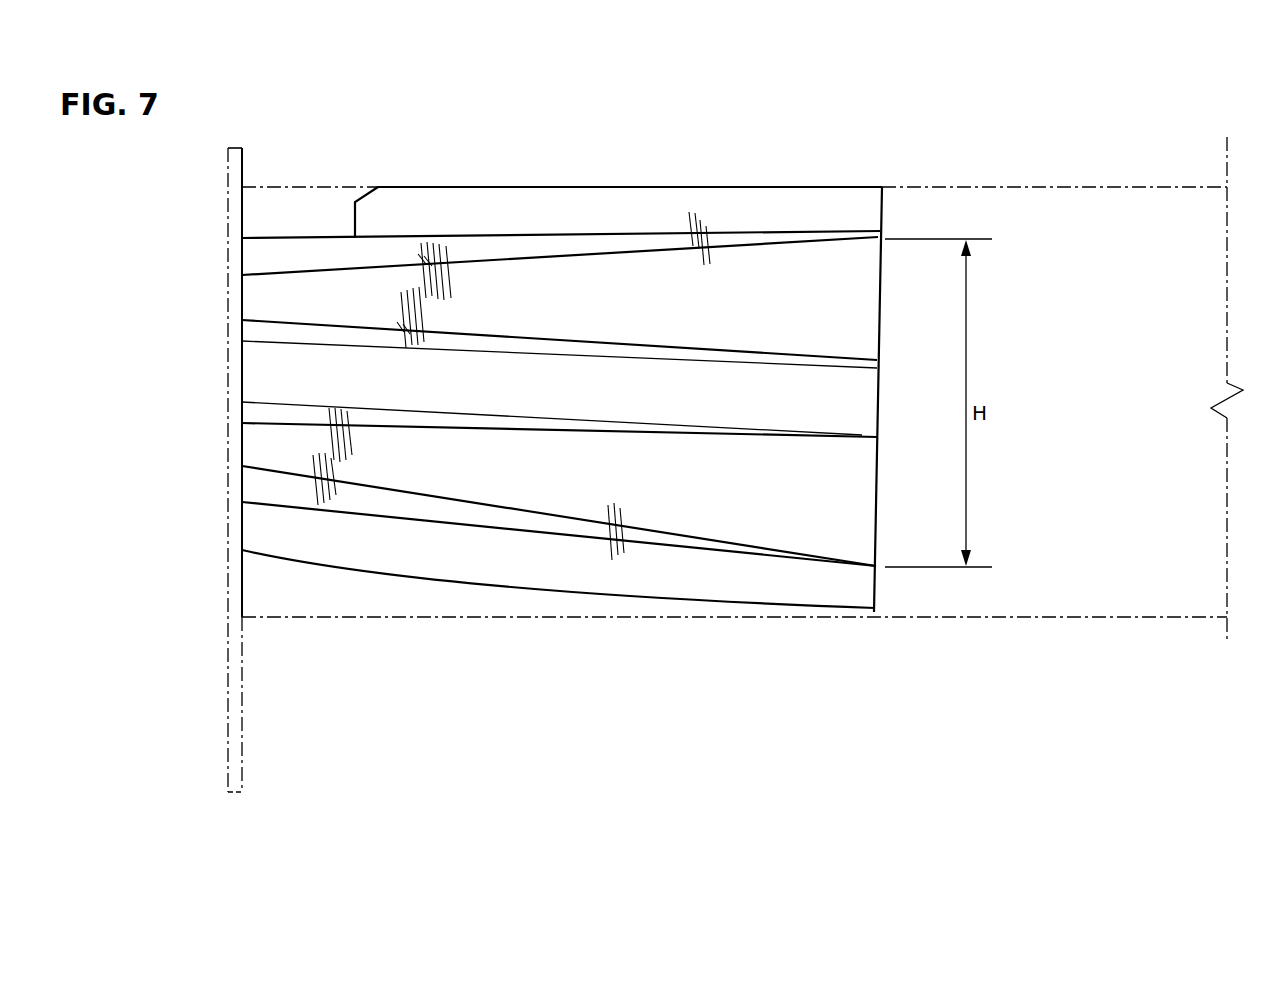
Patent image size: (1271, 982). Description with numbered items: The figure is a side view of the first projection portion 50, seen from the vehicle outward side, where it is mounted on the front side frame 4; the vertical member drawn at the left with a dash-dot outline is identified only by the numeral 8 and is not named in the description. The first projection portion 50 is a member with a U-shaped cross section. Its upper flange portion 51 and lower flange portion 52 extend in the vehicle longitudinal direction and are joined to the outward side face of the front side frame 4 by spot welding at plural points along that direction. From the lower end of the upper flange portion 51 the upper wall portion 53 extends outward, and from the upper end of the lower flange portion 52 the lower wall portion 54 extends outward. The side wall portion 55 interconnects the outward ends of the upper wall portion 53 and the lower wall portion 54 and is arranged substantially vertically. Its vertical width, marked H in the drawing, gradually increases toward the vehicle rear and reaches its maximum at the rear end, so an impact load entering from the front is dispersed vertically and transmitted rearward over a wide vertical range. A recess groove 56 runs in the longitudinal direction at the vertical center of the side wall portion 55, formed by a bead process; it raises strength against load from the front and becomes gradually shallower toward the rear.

The front side frame 4 is at (1005, 188).
The support member 8 is at (230, 598).
The first projection portion 50 is at (775, 158).
The upper flange portion 51 is at (535, 207).
The lower flange portion 52 is at (680, 585).
The upper wall portion 53 is at (325, 252).
The lower wall portion 54 is at (348, 497).
The side wall portion 55 is at (866, 308).
The recess groove 56 is at (626, 399).